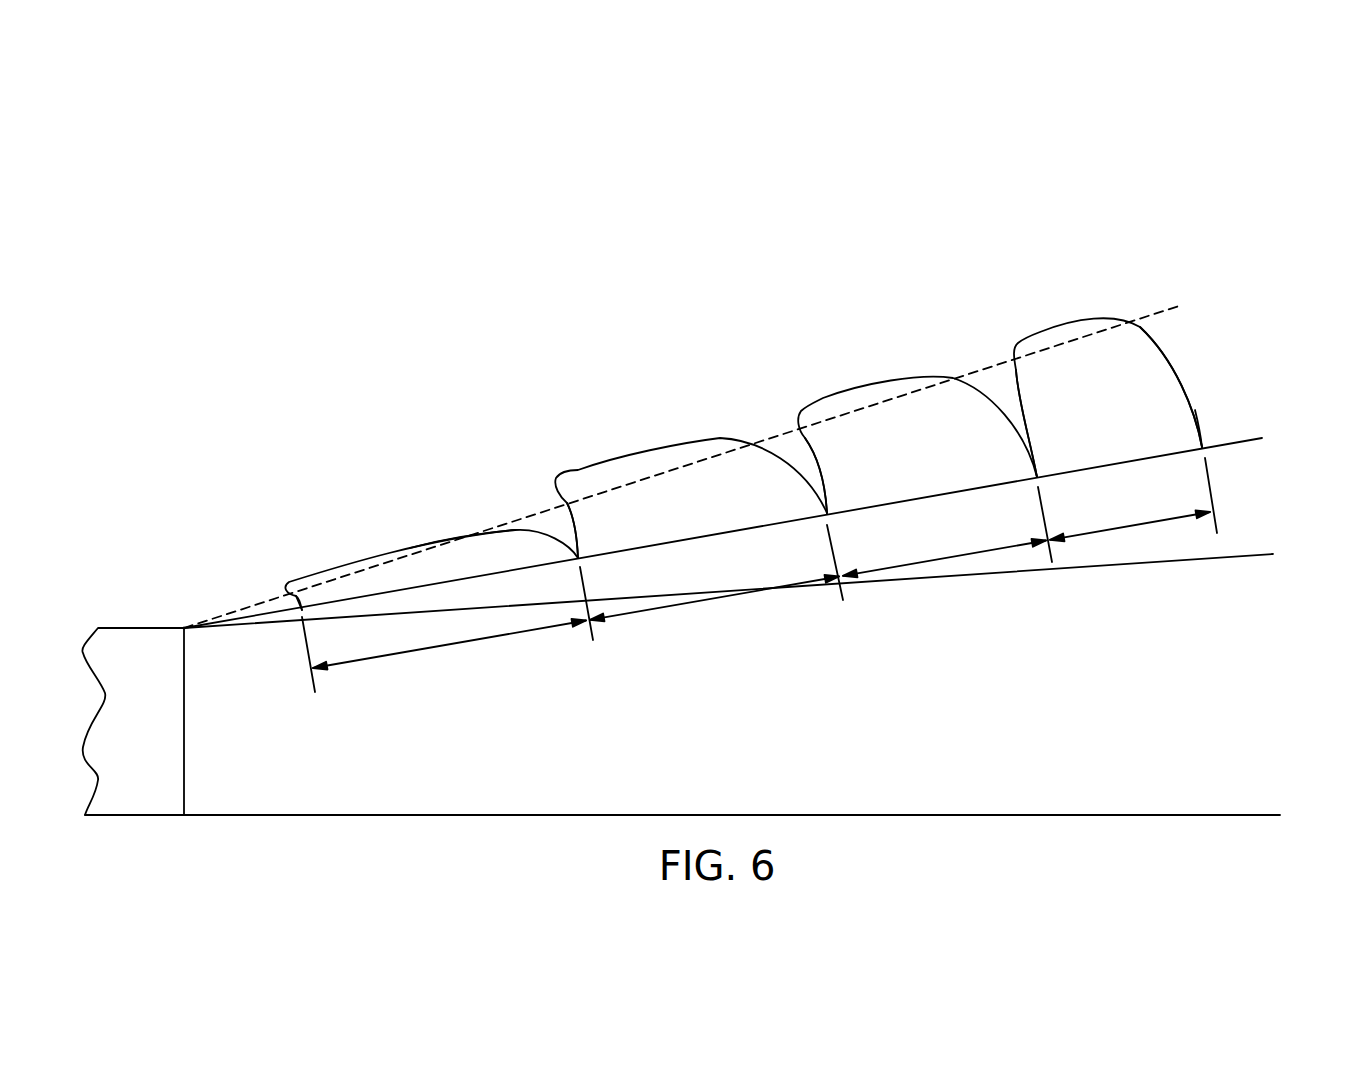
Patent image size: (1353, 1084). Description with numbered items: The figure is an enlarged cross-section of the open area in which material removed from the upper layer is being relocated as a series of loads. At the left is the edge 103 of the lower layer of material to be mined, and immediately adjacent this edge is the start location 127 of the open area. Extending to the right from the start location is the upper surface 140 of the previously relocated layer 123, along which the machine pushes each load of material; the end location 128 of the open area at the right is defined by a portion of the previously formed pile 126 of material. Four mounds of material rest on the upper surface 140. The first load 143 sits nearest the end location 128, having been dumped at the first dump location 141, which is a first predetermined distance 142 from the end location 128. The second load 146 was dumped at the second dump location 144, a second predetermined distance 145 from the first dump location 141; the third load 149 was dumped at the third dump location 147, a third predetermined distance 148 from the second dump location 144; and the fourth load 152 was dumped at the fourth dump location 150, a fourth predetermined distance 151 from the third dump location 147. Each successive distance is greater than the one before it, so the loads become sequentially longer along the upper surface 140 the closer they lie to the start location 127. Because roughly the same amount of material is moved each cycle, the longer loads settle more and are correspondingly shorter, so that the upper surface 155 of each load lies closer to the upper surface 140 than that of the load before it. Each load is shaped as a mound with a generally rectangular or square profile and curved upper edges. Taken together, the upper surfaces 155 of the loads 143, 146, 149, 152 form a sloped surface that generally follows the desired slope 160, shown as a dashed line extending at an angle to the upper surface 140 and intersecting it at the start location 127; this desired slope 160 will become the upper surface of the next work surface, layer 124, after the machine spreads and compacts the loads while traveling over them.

The edge of the lower layer 103 is at (184, 705).
The layer 123 is at (1227, 487).
The layer 124 is at (1212, 342).
The pile of material 126 is at (758, 225).
The start location 127 is at (185, 600).
The end location 128 is at (1226, 412).
The upper surface 140 is at (723, 533).
The first dump location 141 is at (1037, 477).
The first predetermined distance 142 is at (1115, 528).
The first load 143 is at (1088, 413).
The second dump location 144 is at (826, 512).
The second predetermined distance 145 is at (923, 560).
The second load 146 is at (893, 465).
The third dump location 147 is at (578, 558).
The third predetermined distance 148 is at (677, 605).
The third load 149 is at (653, 521).
The fourth dump location 150 is at (302, 608).
The fourth predetermined distance 151 is at (470, 643).
The fourth load 152 is at (412, 577).
The upper surface of the load 155 is at (450, 537).
The desired slope 160 is at (1153, 310).